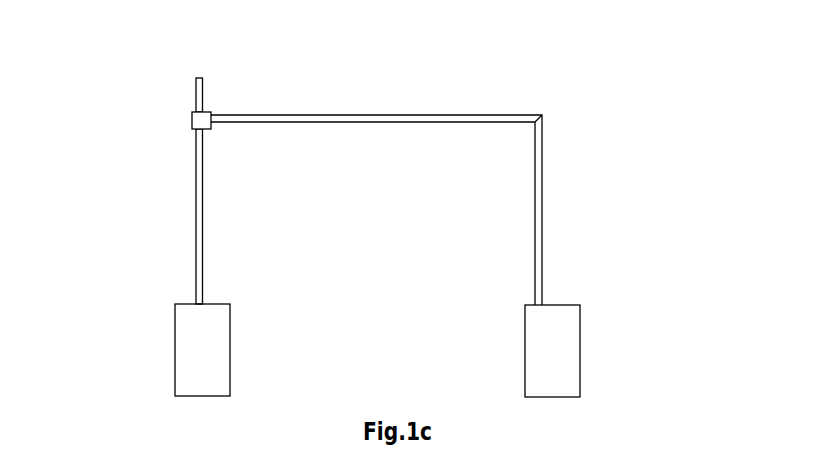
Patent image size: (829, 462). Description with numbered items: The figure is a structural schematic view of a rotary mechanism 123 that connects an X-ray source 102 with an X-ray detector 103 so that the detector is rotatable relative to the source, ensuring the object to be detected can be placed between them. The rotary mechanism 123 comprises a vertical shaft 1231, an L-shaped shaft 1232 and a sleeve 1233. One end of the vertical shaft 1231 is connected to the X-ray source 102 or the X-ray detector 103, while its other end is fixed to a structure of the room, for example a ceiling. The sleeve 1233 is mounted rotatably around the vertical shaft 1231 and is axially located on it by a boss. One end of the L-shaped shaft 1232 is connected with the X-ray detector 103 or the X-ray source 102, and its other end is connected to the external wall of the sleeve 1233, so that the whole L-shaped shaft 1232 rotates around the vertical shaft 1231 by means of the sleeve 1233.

The rotary mechanism 123 is at (367, 170).
The vertical shaft 1231 is at (203, 175).
The L-shaped shaft 1232 is at (542, 117).
The sleeve 1233 is at (230, 72).
The X-ray source 102 is at (232, 312).
The X-ray detector 103 is at (610, 287).